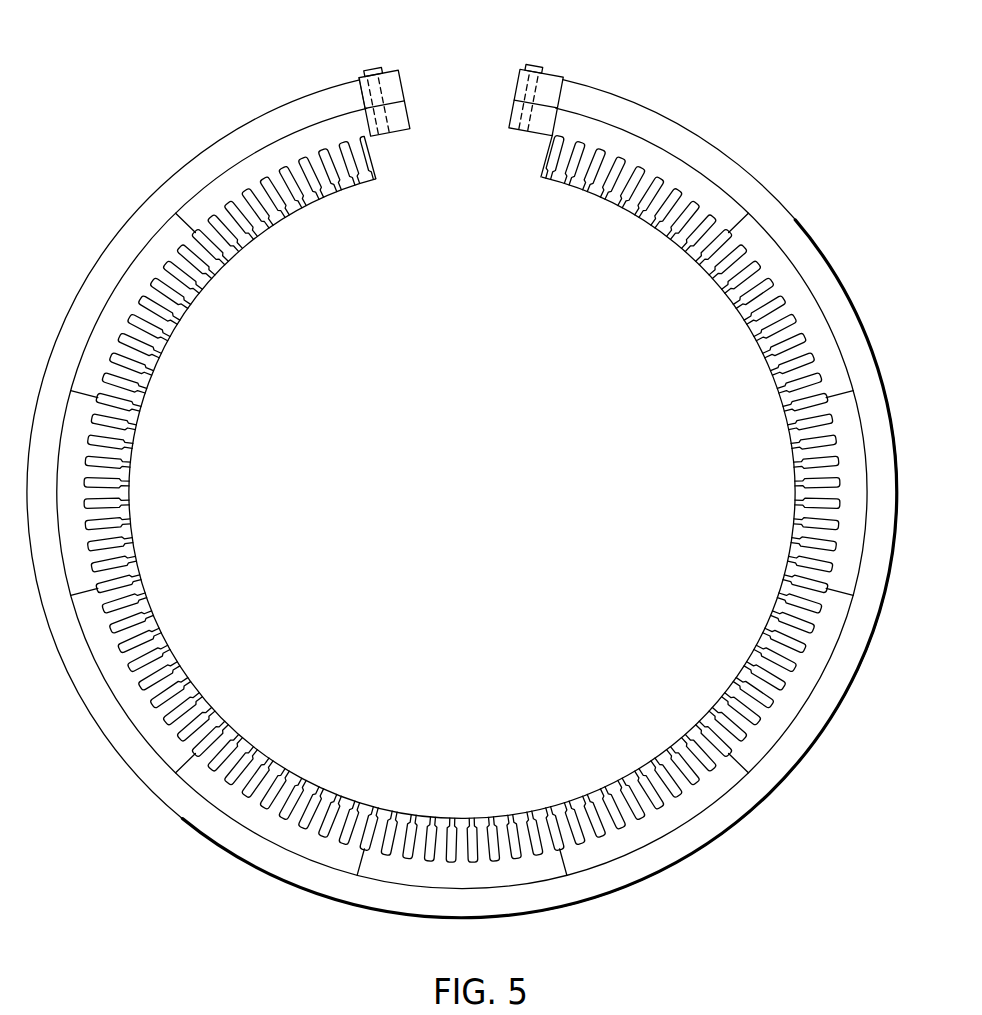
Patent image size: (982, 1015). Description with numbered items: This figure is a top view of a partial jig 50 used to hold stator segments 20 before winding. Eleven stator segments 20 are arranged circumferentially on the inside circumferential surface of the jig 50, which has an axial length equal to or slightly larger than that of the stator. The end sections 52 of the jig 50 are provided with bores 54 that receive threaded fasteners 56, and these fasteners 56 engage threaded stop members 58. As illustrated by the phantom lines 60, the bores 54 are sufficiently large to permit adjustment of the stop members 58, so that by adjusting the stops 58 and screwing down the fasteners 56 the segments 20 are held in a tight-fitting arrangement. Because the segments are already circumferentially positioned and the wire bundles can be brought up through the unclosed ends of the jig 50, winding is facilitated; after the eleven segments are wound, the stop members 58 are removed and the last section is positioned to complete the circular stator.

The stator segments 20 is at (340, 218).
The jig 50 is at (652, 108).
The end sections 52 is at (512, 66).
The bores 54 is at (372, 82).
The threaded fasteners 56 is at (366, 67).
The stop members 58 is at (508, 135).
The phantom lines 60 is at (365, 96).